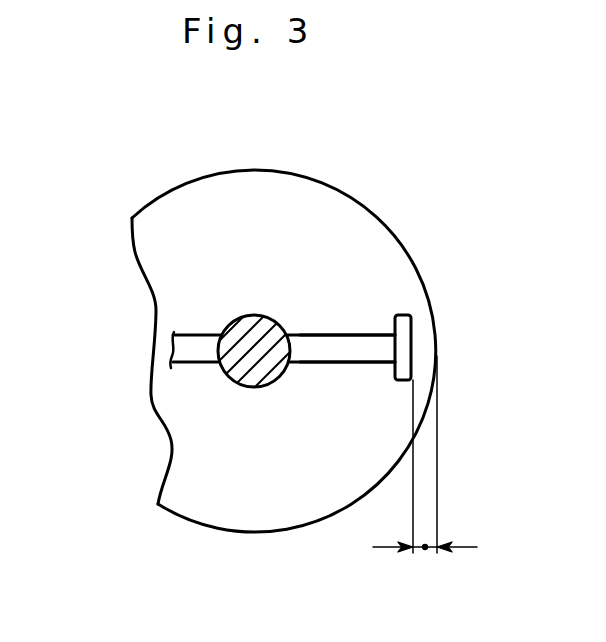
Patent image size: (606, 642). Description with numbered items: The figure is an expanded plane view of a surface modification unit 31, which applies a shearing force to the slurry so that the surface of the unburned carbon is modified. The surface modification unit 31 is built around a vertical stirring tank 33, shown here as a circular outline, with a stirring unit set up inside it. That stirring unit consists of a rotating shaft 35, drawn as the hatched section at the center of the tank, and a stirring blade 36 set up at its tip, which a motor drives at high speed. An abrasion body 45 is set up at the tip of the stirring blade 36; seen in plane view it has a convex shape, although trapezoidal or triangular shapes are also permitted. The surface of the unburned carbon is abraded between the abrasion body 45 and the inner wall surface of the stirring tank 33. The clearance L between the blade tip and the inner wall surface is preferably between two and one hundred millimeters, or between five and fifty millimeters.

The surface modification unit 31 is at (176, 188).
The stirring tank 33 is at (327, 184).
The rotating shaft 35 is at (233, 332).
The stirring blade 36 is at (337, 338).
The abrasion body 45 is at (405, 345).
The clearance L is at (425, 550).